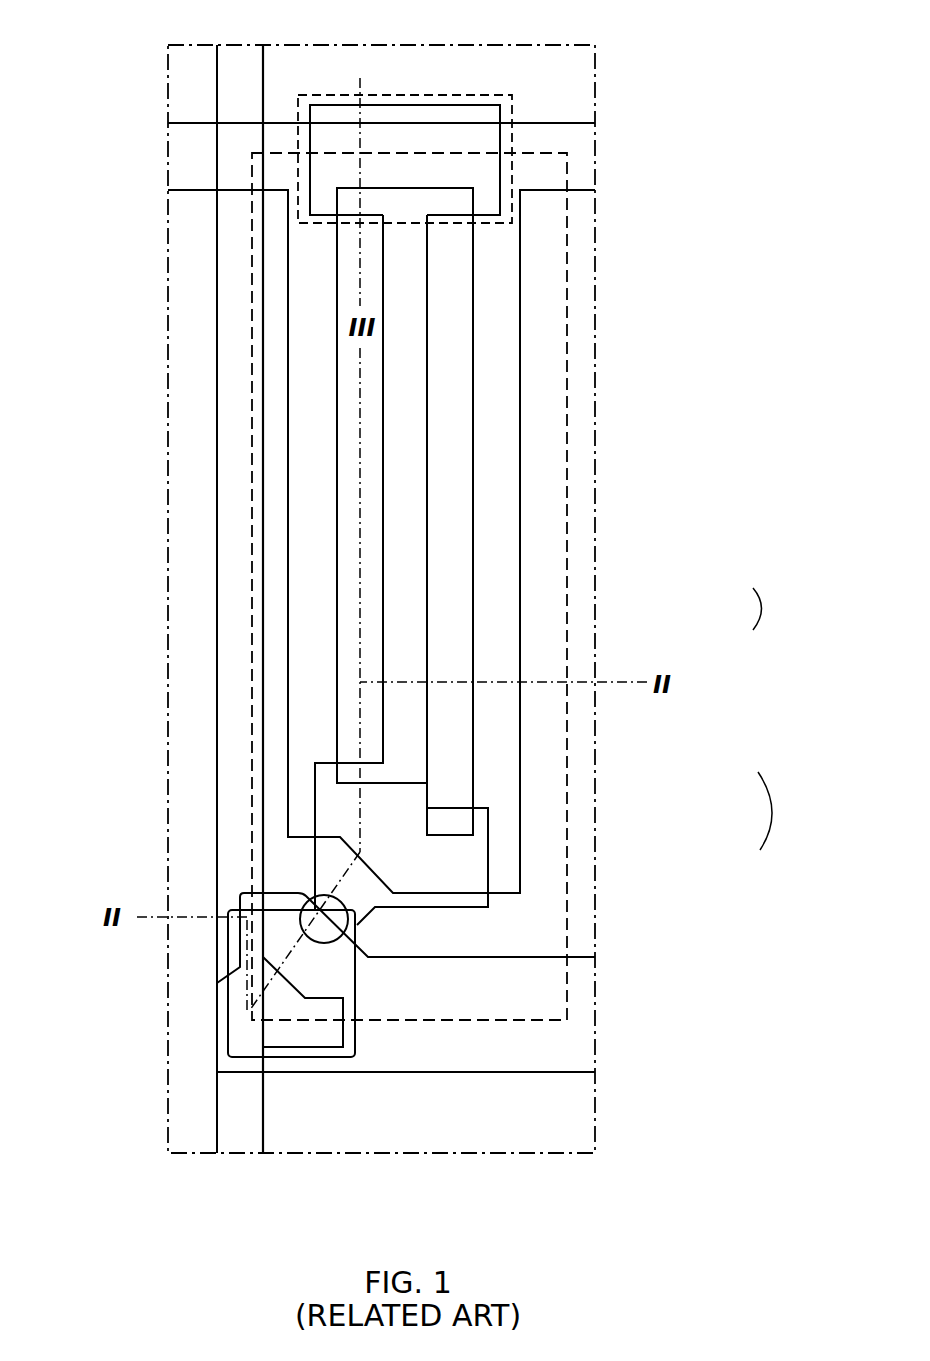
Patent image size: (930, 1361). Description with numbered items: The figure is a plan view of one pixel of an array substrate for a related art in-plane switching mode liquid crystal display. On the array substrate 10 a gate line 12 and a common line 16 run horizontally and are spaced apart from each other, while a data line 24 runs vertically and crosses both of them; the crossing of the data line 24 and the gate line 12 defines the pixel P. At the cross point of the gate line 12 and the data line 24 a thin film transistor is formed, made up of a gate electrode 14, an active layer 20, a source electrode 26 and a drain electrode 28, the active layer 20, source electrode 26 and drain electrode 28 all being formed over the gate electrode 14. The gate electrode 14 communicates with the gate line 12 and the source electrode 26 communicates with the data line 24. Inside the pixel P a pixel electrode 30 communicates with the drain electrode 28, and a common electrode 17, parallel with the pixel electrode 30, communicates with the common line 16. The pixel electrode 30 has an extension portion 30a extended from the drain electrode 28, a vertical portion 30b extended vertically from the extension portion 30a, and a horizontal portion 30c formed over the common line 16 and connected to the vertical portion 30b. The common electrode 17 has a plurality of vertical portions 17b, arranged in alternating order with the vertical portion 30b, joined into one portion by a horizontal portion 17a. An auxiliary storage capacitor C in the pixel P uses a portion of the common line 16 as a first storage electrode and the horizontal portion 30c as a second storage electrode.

The array substrate 10 is at (597, 262).
The gate line 12 is at (537, 1072).
The gate electrode 14 is at (275, 892).
The common line 16 is at (560, 125).
The common electrode 17 is at (783, 811).
The horizontal portion of the common electrode 17a is at (510, 872).
The vertical portions of the common electrode 17b is at (522, 803).
The active layer 20 is at (363, 1040).
The data line 24 is at (213, 772).
The source electrode 26 is at (313, 1033).
The drain electrode 28 is at (357, 925).
The pixel electrode 30 is at (775, 609).
The extension portion of the pixel electrode 30a is at (457, 807).
The vertical portion of the pixel electrode 30b is at (427, 637).
The horizontal portion of the pixel electrode 30c is at (500, 160).
The pixel P is at (567, 393).
The auxiliary storage capacitor C is at (478, 95).